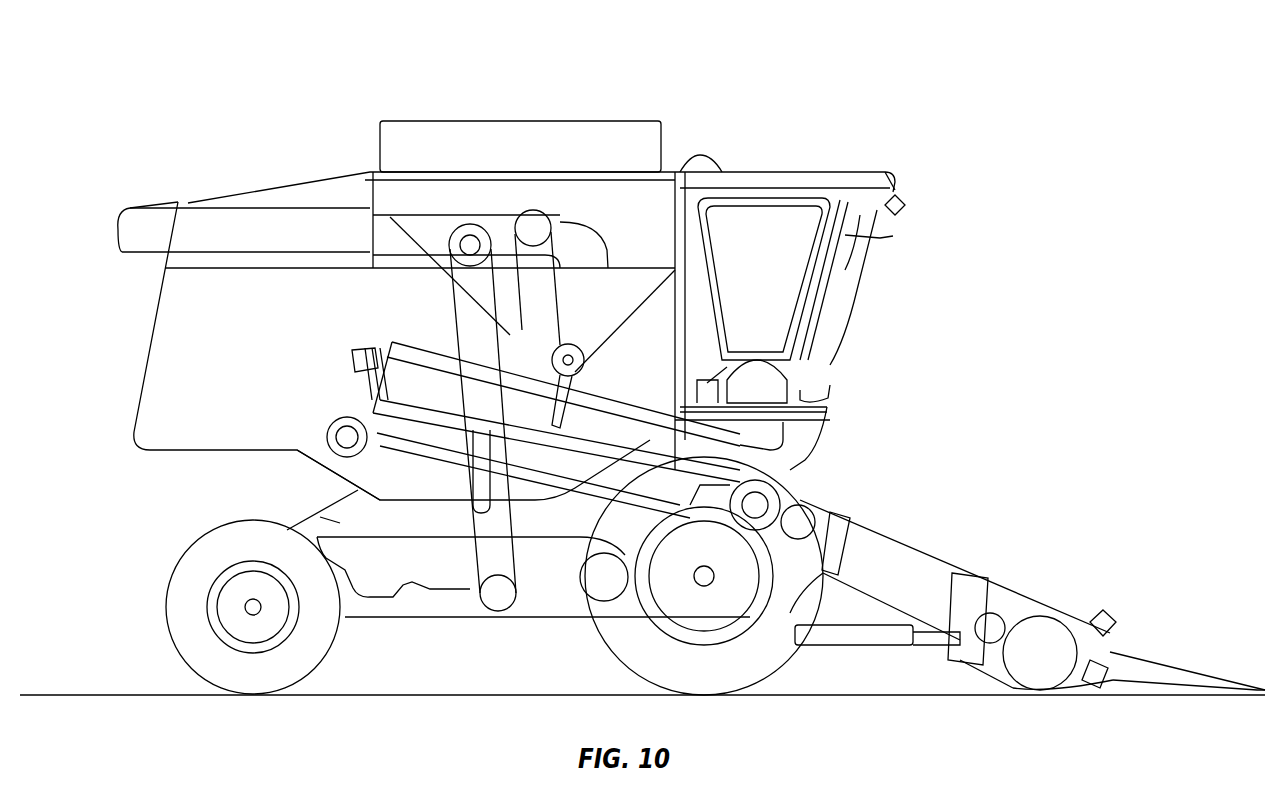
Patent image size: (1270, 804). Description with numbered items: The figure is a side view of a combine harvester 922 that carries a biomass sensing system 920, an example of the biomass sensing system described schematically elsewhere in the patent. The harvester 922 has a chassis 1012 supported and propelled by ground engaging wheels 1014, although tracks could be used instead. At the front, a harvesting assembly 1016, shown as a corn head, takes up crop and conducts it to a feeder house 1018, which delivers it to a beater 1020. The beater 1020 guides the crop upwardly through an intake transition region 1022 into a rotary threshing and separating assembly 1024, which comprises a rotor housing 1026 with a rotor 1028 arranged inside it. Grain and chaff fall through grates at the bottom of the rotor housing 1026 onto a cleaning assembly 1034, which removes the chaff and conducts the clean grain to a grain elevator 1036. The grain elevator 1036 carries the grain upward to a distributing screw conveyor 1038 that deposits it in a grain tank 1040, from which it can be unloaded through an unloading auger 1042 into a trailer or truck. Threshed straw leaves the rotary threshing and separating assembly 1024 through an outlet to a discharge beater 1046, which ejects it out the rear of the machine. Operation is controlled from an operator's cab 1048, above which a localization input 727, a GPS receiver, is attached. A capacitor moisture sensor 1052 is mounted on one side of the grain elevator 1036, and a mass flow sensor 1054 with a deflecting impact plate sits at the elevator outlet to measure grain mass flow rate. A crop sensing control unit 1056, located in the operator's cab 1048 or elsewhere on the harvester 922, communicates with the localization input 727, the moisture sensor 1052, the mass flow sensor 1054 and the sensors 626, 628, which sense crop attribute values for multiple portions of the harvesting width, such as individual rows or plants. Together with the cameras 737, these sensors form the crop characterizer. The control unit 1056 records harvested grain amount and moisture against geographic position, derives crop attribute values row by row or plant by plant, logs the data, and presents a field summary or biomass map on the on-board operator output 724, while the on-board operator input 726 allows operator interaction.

The biomass sensing system 920 is at (934, 76).
The harvester 922 is at (900, 182).
The cameras 737 is at (905, 210).
The on-board operator output 724 is at (885, 241).
The on-board operator input 726 is at (850, 240).
The localization input 727 is at (690, 162).
The unloading auger 1042 is at (148, 212).
The mass flow sensor 1054 is at (488, 232).
The distributing screw conveyor 1038 is at (538, 218).
The operator's cab 1048 is at (778, 267).
The grain tank 1040 is at (626, 311).
The rotor housing 1026 is at (452, 330).
The rotor 1028 is at (428, 345).
The rotary threshing and separating assembly 1024 is at (600, 386).
The discharge beater 1046 is at (332, 428).
The crop sensing control unit 1056 is at (828, 388).
The intake transition region 1022 is at (800, 448).
The beater 1020 is at (775, 490).
The cleaning assembly 1034 is at (370, 525).
The capacitor moisture sensor 1052 is at (462, 480).
The chassis 1012 is at (320, 517).
The feeder house 1018 is at (928, 545).
The harvesting assembly 1016 is at (1025, 595).
The sensors 626 is at (1235, 680).
The ground engaging wheels 1014 is at (185, 620).
The grain elevator 1036 is at (538, 600).
The sensors 628 is at (1102, 670).